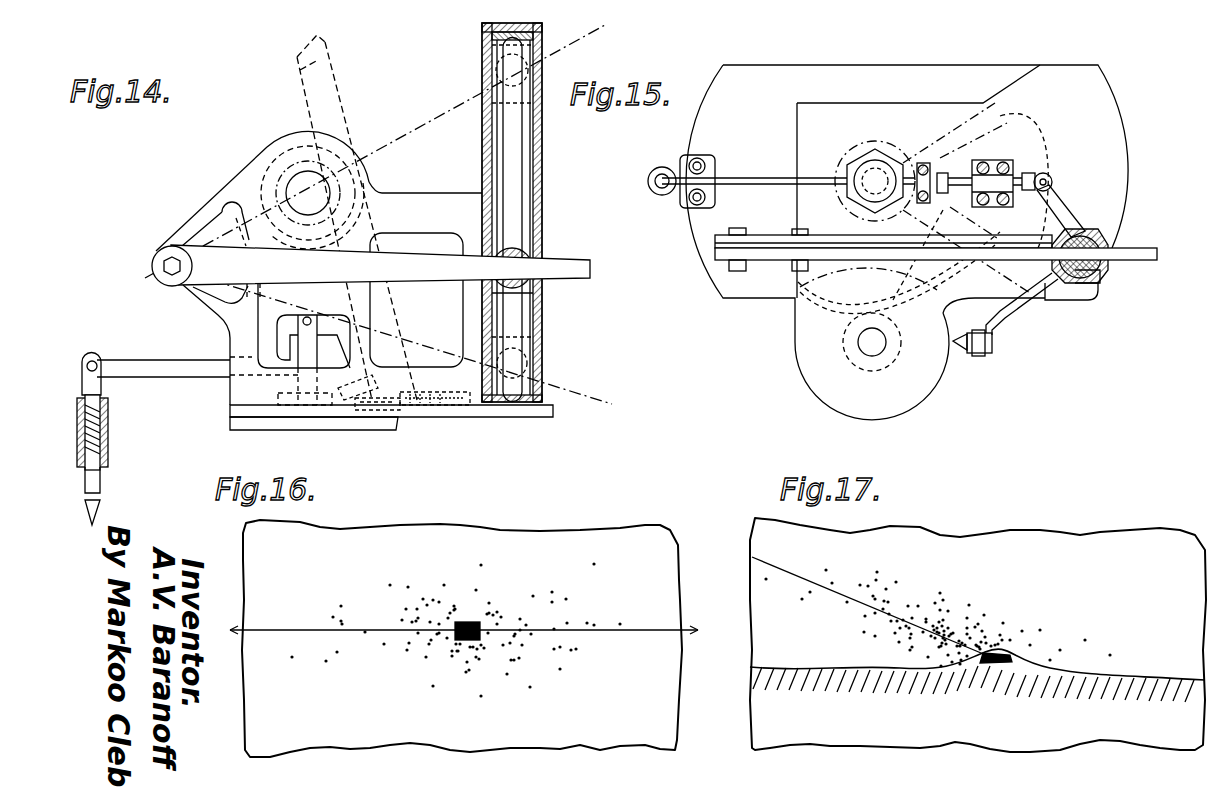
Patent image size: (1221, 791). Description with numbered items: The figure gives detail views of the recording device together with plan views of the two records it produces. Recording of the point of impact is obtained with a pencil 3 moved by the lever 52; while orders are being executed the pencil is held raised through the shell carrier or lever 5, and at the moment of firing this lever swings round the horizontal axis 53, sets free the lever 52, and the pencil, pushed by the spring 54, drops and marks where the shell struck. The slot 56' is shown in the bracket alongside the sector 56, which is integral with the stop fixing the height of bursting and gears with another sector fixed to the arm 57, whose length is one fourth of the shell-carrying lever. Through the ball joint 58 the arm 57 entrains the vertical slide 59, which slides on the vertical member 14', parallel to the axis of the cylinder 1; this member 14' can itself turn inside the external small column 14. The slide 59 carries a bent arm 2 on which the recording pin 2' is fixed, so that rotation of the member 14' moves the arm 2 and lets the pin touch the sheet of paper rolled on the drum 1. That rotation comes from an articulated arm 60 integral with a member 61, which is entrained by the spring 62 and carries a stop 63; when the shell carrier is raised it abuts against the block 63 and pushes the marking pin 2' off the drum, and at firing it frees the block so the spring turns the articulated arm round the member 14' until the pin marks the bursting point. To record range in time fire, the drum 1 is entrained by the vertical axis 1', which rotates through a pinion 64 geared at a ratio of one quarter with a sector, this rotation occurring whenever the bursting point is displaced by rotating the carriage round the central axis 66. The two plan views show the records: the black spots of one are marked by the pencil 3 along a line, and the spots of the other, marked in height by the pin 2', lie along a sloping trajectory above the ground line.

In FIG. 15, the cylinder 1 is at (867, 371).
In FIG. 15, the vertical axis 1' is at (856, 359).
In FIG. 15, the bent arm 2 is at (1022, 313).
In FIG. 15, the recording pin 2' is at (972, 361).
In FIG. 14, the pencil 3 is at (106, 495).
In FIG. 14, the shell carrier 5 is at (333, 130).
In FIG. 14, the external small column 14 is at (531, 212).
In FIG. 15, the external small column 14 is at (1092, 303).
In FIG. 14, the vertical member 14' is at (539, 220).
In FIG. 15, the vertical member 14' is at (1085, 241).
In FIG. 14, the lever 52 is at (147, 368).
In FIG. 15, the lever 52 is at (742, 178).
In FIG. 14, the horizontal axis 53 is at (305, 190).
In FIG. 14, the spring 54 is at (77, 410).
In FIG. 14, the sector 56 is at (211, 199).
In FIG. 14, the bracket slot 56' is at (208, 249).
In FIG. 14, the arm 57 is at (422, 262).
In FIG. 15, the arm 57 is at (1140, 261).
In FIG. 14, the ball joint 58 is at (520, 252).
In FIG. 15, the ball joint 58 is at (1108, 240).
In FIG. 14, the vertical slide 59 is at (527, 295).
In FIG. 15, the vertical slide 59 is at (1108, 275).
In FIG. 15, the articulated arm 60 is at (1057, 205).
In FIG. 15, the member 61 is at (1018, 172).
In FIG. 14, the spring 62 is at (427, 390).
In FIG. 14, the stop 63 is at (398, 417).
In FIG. 15, the stop 63 is at (943, 173).
In FIG. 15, the pinion 64 is at (895, 353).
In FIG. 14, the central axis 66 is at (305, 345).
In FIG. 15, the central axis 66 is at (870, 178).